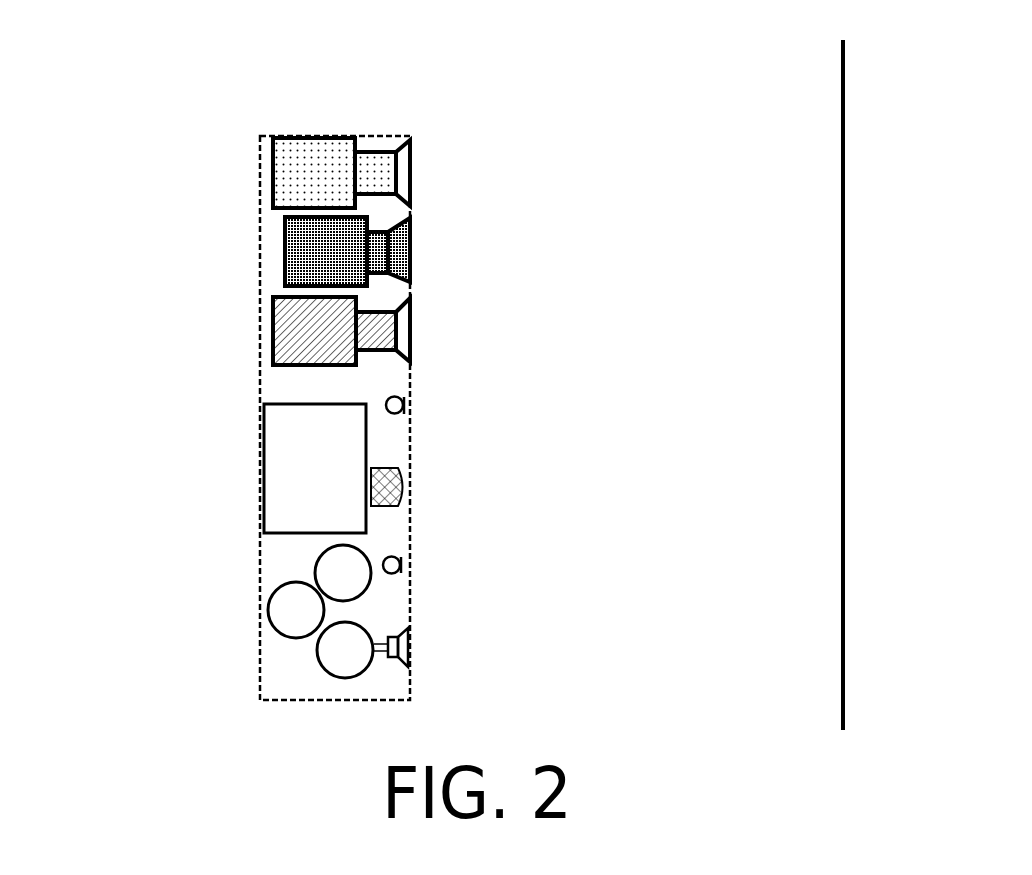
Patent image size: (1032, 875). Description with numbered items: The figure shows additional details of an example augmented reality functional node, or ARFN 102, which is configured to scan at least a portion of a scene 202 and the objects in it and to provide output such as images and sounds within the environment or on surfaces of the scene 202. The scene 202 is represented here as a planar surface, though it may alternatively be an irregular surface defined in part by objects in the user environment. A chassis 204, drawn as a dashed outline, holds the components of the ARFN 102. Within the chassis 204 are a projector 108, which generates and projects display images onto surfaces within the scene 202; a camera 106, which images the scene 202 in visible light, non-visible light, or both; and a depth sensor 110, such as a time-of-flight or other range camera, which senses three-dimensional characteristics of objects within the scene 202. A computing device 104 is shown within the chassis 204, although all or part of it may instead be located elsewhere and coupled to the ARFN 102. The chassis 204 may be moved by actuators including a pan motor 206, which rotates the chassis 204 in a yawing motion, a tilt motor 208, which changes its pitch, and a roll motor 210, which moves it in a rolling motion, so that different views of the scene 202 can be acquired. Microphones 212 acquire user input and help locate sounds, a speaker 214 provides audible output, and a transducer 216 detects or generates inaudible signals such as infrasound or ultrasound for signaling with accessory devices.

The ARFN 102 is at (280, 137).
The computing device 104 is at (288, 440).
The camera 106 is at (292, 255).
The projector 108 is at (287, 167).
The depth sensor 110 is at (278, 326).
The scene 202 is at (840, 50).
The chassis 204 is at (373, 140).
The pan motor 206 is at (321, 562).
The tilt motor 208 is at (273, 608).
The roll motor 210 is at (322, 651).
The microphone 212 is at (404, 404).
The speaker 214 is at (405, 648).
The transducer 216 is at (393, 483).